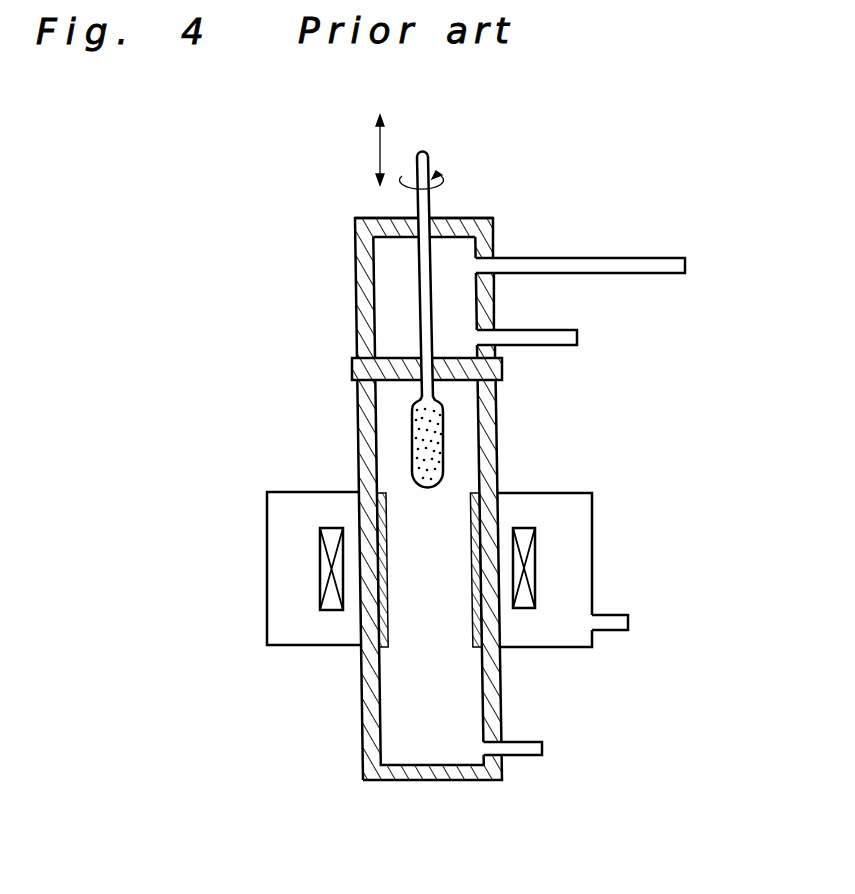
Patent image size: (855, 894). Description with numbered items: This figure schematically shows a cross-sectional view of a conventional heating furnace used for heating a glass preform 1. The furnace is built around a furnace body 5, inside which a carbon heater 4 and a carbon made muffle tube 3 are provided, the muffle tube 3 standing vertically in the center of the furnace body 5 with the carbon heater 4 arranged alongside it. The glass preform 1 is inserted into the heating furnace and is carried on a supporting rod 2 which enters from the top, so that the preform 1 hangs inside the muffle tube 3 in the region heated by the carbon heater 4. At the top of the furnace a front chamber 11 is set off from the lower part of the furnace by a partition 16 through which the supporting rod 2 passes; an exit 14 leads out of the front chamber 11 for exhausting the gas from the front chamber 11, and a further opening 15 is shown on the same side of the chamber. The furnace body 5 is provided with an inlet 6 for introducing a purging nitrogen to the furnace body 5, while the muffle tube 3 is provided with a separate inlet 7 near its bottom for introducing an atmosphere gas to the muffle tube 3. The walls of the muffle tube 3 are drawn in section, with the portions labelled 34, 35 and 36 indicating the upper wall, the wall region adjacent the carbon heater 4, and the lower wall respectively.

The glass preform 1 is at (438, 403).
The supporting rod 2 is at (428, 158).
The carbon made muffle tube 3 is at (499, 415).
The carbon heater 4 is at (320, 568).
The furnace body 5 is at (577, 522).
The inlet 6 is at (612, 630).
The inlet 7 is at (517, 752).
The front chamber 11 is at (456, 250).
The exit 14 is at (650, 262).
The pipe 15 is at (553, 337).
The partition 16 is at (352, 368).
The vessel wall 34 is at (365, 425).
The liner 35 is at (362, 542).
The lower vessel wall 36 is at (368, 710).